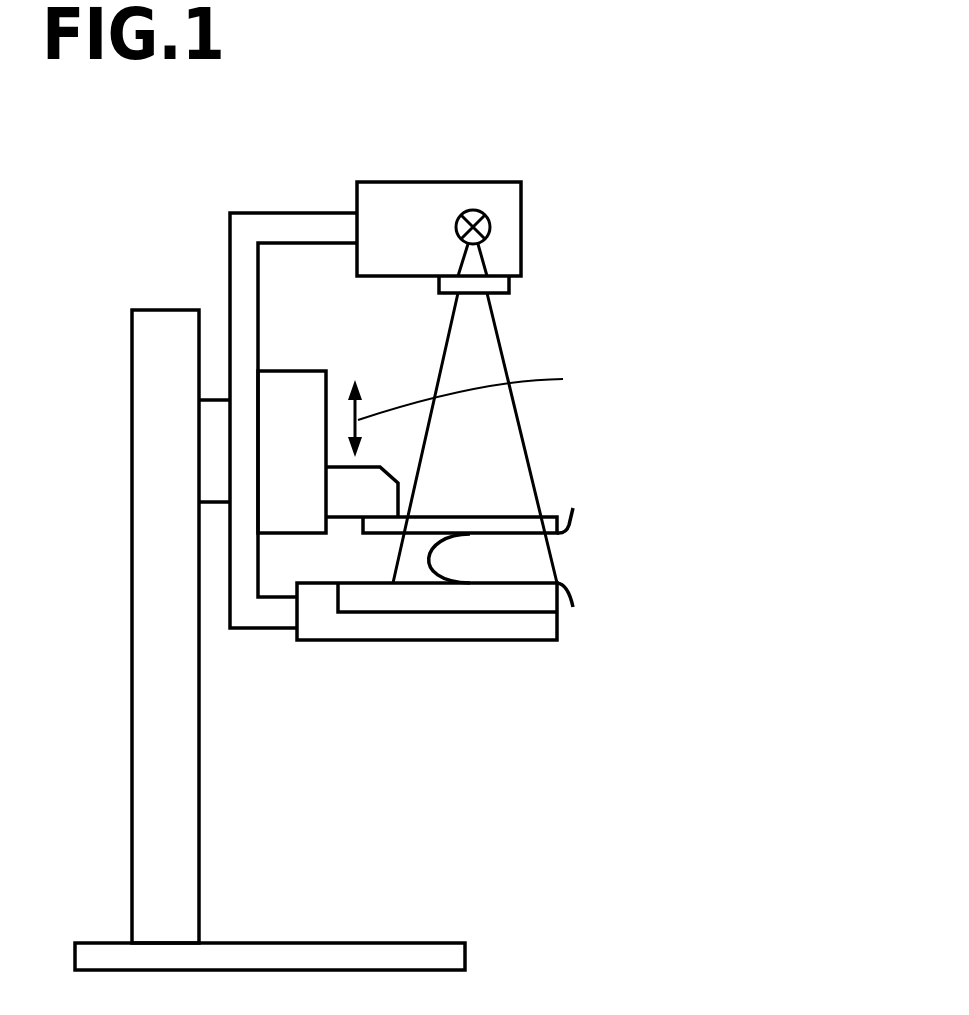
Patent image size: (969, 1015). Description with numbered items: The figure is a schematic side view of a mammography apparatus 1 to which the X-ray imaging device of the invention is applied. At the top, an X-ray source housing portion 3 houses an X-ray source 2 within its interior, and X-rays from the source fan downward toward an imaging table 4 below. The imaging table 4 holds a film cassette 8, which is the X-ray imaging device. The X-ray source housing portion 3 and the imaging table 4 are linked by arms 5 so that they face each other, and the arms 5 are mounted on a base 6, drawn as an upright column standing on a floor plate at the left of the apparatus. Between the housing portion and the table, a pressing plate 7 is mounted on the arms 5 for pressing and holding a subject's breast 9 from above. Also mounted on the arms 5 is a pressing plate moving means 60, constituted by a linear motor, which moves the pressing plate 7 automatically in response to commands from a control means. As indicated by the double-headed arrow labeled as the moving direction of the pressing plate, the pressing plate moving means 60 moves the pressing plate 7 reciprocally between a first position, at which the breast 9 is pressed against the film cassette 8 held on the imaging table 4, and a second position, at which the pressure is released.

The mammography apparatus 1 is at (538, 74).
The X-ray source 2 is at (472, 210).
The X-ray source housing portion 3 is at (503, 249).
The imaging table 4 is at (462, 625).
The arms 5 is at (265, 227).
The base 6 is at (163, 320).
The pressing plate 7 is at (547, 515).
The film cassette 8 is at (533, 597).
The breast 9 is at (465, 553).
The pressing plate moving means 60 is at (292, 383).